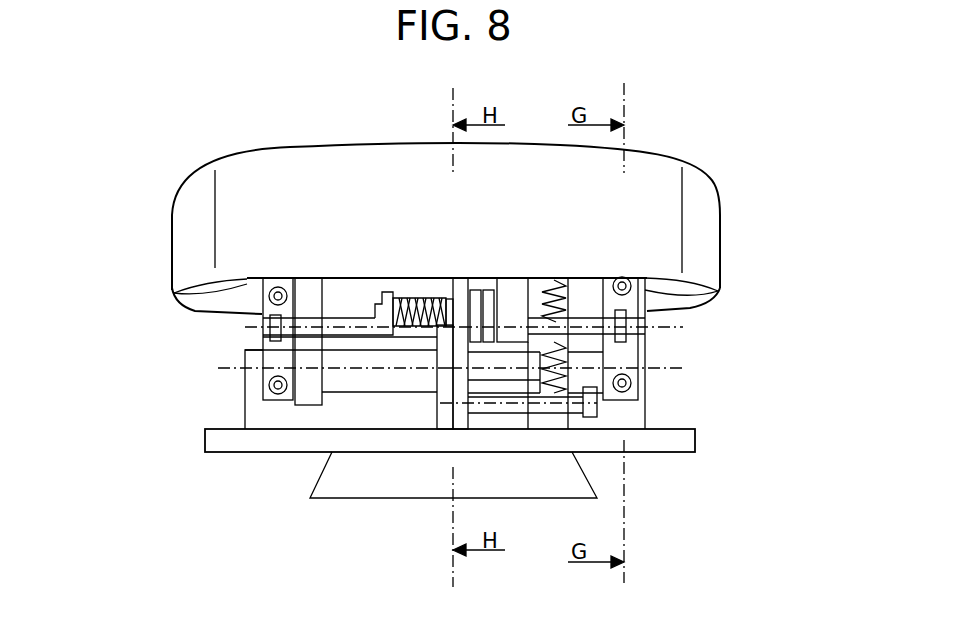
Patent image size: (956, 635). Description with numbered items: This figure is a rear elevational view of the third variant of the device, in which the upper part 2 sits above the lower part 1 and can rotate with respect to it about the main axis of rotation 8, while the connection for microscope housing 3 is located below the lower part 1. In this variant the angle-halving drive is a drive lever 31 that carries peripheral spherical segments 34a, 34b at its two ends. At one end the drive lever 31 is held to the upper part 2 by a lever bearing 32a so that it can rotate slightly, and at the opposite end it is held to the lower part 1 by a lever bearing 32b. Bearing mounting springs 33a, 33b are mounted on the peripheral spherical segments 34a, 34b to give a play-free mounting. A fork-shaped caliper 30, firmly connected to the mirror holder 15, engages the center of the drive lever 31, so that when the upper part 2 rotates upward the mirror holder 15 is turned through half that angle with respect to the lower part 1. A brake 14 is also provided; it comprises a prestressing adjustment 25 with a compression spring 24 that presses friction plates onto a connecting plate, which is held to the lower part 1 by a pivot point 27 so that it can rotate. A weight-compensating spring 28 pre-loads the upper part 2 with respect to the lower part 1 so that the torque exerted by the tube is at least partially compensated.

The lower part 1 is at (697, 440).
The upper part 2 is at (697, 170).
The connection for microscope housing 3 is at (585, 480).
The axis of rotation, main axis of rotation 8 is at (347, 368).
The brake 14 is at (525, 279).
The mirror holder 15 is at (365, 352).
The compression spring 24 is at (417, 293).
The prestressing adjustment 25 is at (390, 277).
The pivot point 27 is at (468, 405).
The weight-compensating spring 28 is at (563, 279).
The caliper 30 is at (471, 278).
The drive lever 31 is at (390, 336).
The lever bearing 32a is at (263, 300).
The lever bearing 32b is at (648, 336).
The bearing mounting spring 33a is at (265, 362).
The bearing mounting spring 33b is at (647, 384).
The peripheral spherical segment on drive lever 34a is at (270, 329).
The peripheral spherical segment on drive lever 34b is at (648, 314).